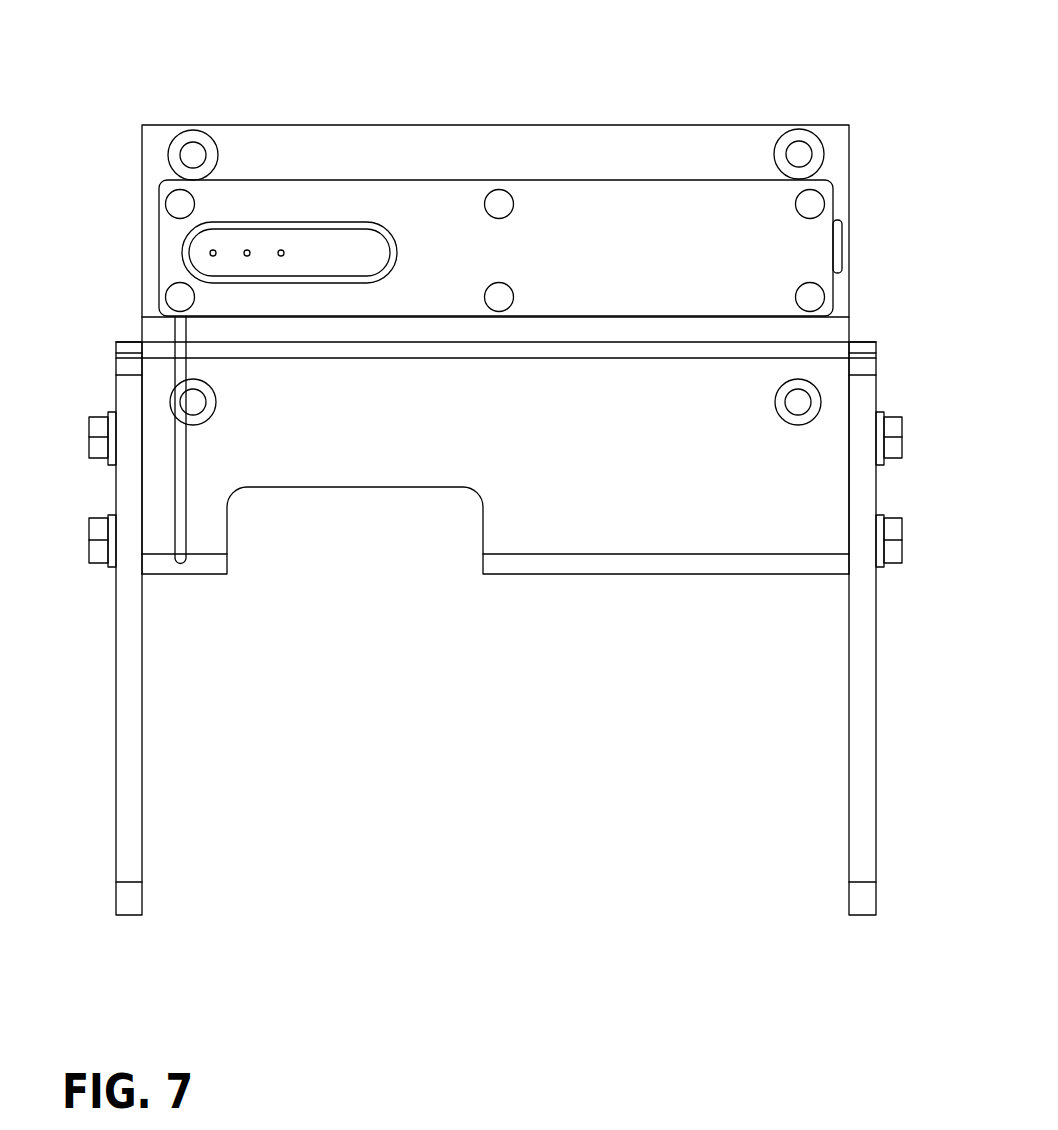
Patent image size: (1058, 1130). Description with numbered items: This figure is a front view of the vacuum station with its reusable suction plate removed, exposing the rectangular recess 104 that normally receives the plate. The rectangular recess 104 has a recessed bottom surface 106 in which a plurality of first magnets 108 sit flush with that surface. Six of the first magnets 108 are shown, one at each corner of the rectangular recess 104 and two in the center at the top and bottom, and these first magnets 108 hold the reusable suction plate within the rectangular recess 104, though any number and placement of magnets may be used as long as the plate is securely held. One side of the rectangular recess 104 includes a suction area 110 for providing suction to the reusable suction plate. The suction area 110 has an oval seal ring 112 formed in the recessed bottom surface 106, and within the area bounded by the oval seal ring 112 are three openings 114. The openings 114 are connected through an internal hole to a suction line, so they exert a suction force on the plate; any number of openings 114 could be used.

The rectangular recess 104 is at (567, 181).
The recessed bottom surface 106 is at (574, 265).
The first magnets 108 is at (499, 203).
The suction area 110 is at (385, 220).
The oval seal ring 112 is at (345, 222).
The openings 114 is at (213, 250).